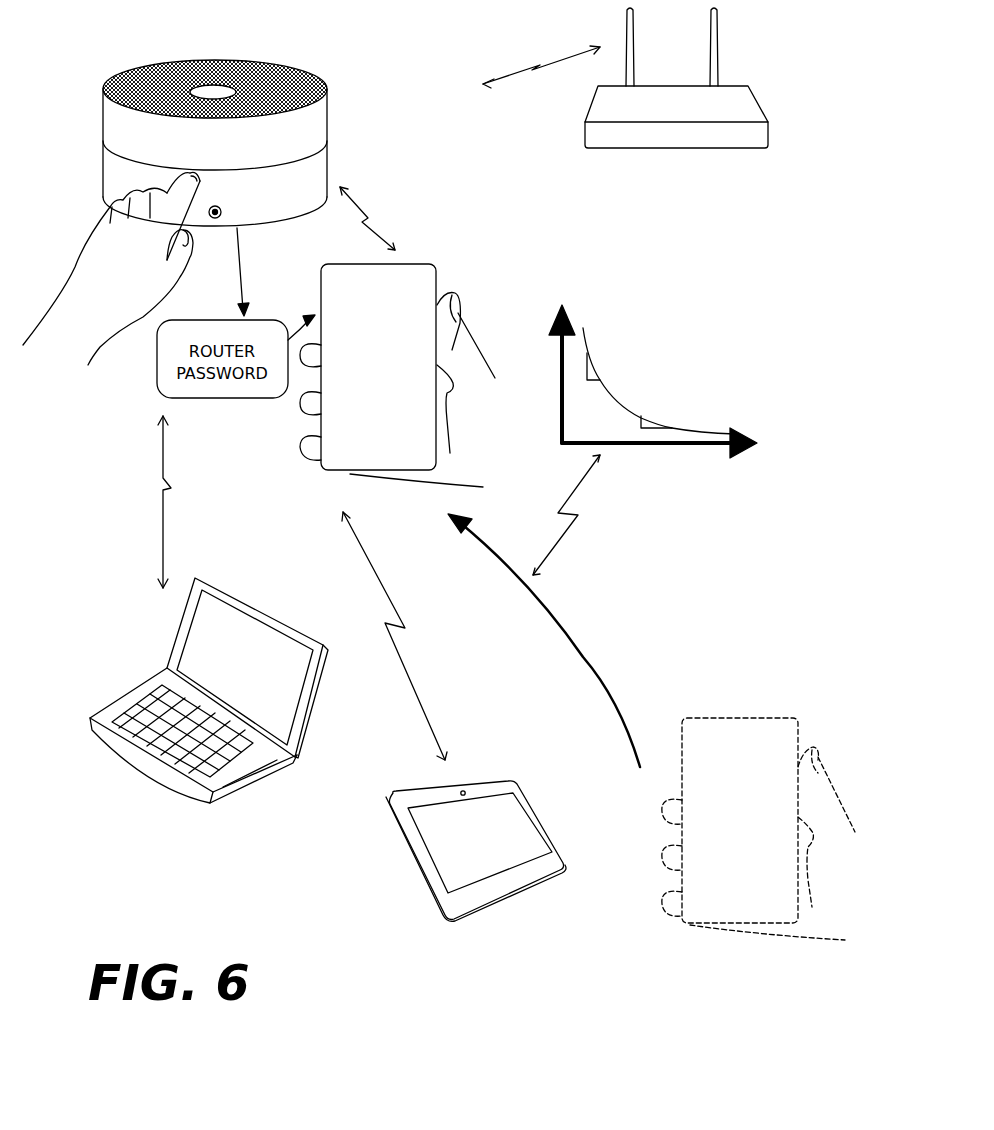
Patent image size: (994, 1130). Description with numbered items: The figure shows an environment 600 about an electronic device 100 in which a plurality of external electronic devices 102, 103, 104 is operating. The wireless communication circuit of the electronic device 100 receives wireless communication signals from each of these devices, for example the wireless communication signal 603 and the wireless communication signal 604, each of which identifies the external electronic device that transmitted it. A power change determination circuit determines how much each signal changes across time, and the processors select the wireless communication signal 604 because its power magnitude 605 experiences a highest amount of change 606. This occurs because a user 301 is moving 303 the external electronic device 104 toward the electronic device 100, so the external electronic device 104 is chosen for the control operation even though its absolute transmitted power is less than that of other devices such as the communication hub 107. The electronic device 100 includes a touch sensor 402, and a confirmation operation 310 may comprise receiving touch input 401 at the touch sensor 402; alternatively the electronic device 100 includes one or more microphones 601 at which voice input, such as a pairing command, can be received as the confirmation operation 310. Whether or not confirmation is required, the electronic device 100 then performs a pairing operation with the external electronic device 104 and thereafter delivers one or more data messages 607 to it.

The electronic device 100 is at (260, 46).
The touch input 401 is at (183, 155).
The touch sensor 402 is at (308, 124).
The confirmation operation 310 is at (130, 181).
The microphones 601 is at (222, 211).
The environment 600 is at (507, 41).
The communication hub 107 is at (610, 107).
The wireless communication signal 604 is at (372, 216).
The external electronic device 104 is at (413, 285).
The user 301 is at (455, 335).
The power magnitude 605 is at (594, 344).
The highest amount of change 606 is at (585, 373).
The data messages 607 is at (163, 487).
The external electronic device 102 is at (227, 640).
The wireless communication signal 603 is at (405, 627).
The moving 303 is at (585, 660).
The external electronic device 103 is at (480, 805).